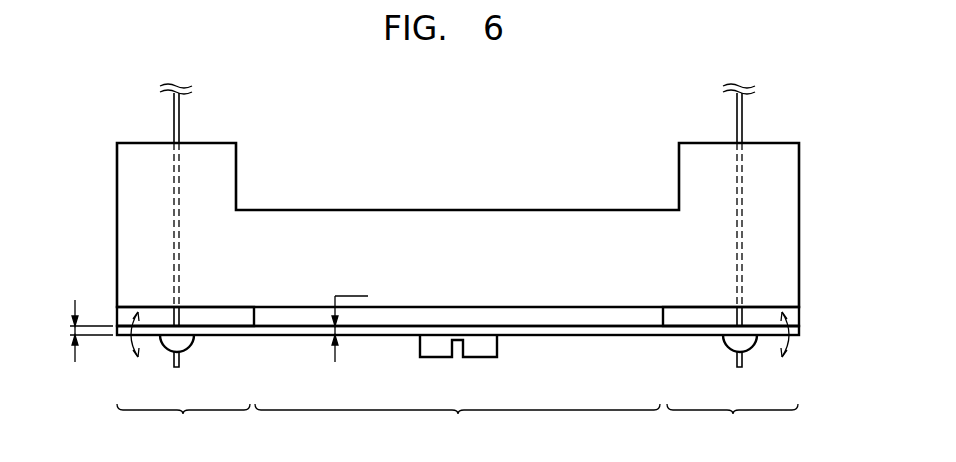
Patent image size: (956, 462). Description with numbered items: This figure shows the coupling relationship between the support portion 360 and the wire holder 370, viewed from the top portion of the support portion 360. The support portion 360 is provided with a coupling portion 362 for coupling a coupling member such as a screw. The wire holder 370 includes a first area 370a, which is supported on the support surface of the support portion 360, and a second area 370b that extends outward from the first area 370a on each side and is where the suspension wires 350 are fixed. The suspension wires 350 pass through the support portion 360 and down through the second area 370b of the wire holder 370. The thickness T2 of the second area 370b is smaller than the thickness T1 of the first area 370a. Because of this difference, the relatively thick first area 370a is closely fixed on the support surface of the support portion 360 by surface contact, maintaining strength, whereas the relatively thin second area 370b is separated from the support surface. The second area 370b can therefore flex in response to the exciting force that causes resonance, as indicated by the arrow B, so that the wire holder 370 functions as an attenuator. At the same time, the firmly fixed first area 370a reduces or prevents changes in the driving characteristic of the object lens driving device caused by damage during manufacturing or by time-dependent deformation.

The suspension wires 350 is at (173, 118).
The support portion 360 is at (799, 227).
The coupling portion 362 is at (527, 322).
The wire holder 370 is at (553, 338).
The first area 370a is at (457, 423).
The second area 370b is at (457, 423).
The thickness of the first area T1 is at (350, 314).
The thickness of the second area T2 is at (76, 331).
The arrow B is at (127, 336).